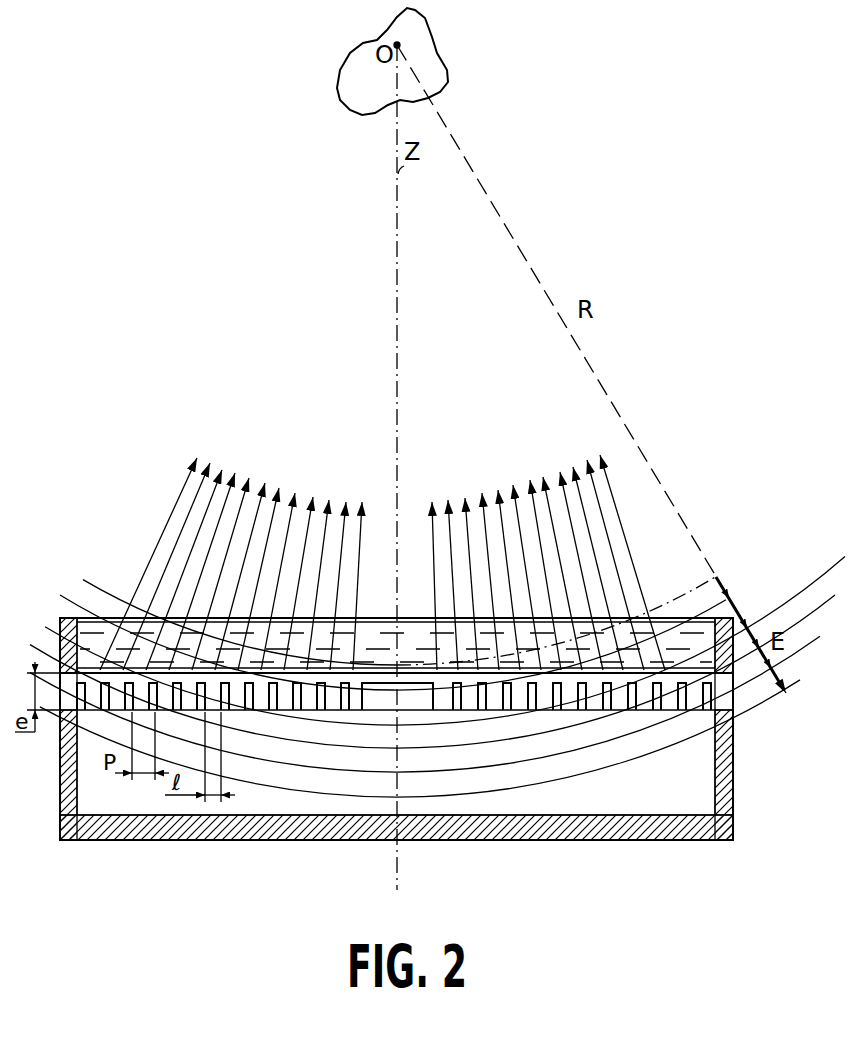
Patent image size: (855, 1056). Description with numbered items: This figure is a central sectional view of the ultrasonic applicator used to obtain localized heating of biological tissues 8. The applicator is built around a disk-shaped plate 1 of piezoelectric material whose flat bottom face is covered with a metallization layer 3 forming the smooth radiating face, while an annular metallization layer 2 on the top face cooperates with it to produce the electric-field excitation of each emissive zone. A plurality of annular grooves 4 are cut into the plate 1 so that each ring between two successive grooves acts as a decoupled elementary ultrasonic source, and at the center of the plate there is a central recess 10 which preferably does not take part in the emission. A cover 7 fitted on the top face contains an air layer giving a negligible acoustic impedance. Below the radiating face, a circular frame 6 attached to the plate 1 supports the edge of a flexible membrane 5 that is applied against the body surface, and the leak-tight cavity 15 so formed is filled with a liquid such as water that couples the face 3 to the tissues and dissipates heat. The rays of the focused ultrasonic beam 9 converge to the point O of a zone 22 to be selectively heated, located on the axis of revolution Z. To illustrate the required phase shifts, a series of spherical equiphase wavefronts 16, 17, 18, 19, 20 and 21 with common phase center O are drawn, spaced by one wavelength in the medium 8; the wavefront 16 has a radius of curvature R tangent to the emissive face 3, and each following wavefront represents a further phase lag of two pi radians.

The plate 1 is at (737, 705).
The annular metallization layer 2 is at (277, 708).
The metallization layer 3 is at (400, 670).
The annular grooves 4 is at (315, 708).
The membrane 5 is at (95, 617).
The circular frame 6 is at (62, 642).
The cover 7 is at (713, 778).
The biological tissues 8 is at (429, 467).
The focused ultrasonic beam 9 is at (330, 477).
The central recess 10 is at (395, 690).
The leak-tight cavity 15 is at (430, 633).
The spherical equiphase wavefront 16 is at (700, 585).
The spherical equiphase wavefront 17 is at (722, 600).
The spherical equiphase wavefront 18 is at (747, 622).
The spherical equiphase wavefront 19 is at (588, 720).
The spherical equiphase wavefront 20 is at (557, 753).
The spherical equiphase wavefront 21 is at (525, 786).
The zone 22 is at (448, 72).